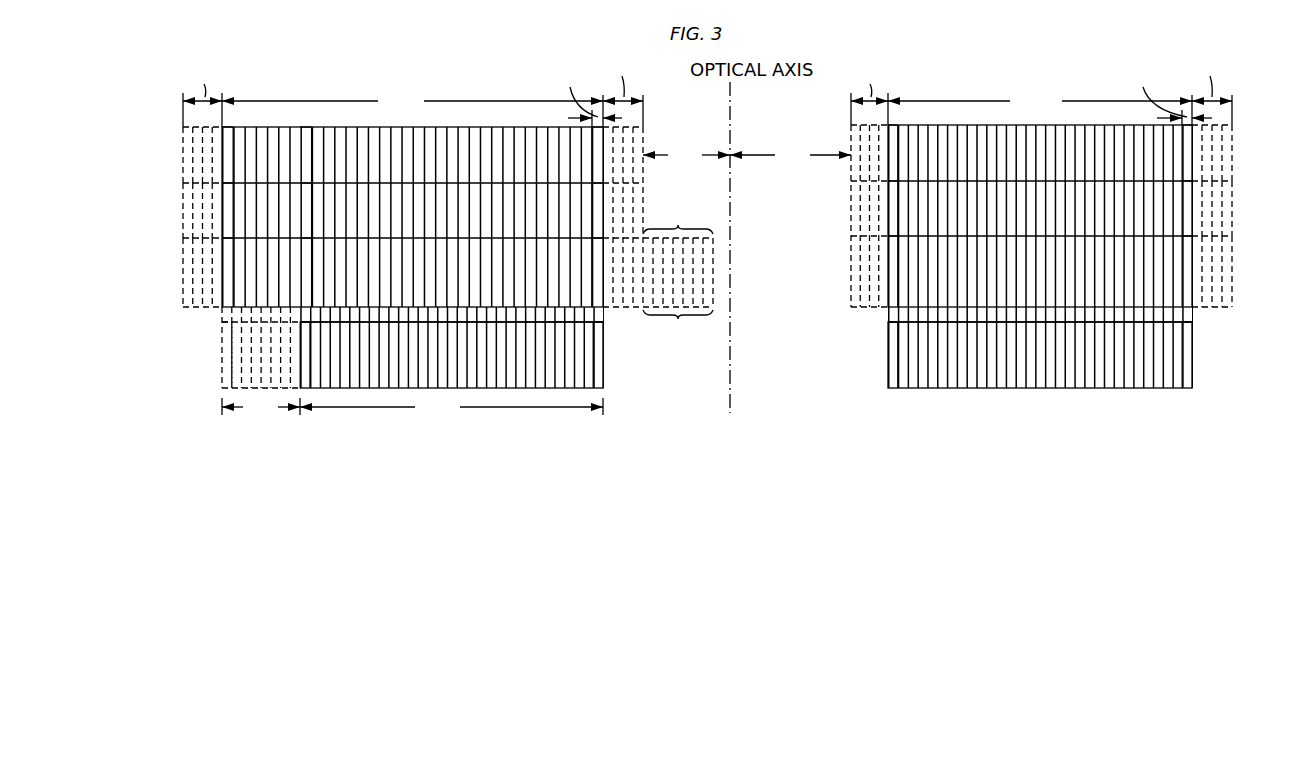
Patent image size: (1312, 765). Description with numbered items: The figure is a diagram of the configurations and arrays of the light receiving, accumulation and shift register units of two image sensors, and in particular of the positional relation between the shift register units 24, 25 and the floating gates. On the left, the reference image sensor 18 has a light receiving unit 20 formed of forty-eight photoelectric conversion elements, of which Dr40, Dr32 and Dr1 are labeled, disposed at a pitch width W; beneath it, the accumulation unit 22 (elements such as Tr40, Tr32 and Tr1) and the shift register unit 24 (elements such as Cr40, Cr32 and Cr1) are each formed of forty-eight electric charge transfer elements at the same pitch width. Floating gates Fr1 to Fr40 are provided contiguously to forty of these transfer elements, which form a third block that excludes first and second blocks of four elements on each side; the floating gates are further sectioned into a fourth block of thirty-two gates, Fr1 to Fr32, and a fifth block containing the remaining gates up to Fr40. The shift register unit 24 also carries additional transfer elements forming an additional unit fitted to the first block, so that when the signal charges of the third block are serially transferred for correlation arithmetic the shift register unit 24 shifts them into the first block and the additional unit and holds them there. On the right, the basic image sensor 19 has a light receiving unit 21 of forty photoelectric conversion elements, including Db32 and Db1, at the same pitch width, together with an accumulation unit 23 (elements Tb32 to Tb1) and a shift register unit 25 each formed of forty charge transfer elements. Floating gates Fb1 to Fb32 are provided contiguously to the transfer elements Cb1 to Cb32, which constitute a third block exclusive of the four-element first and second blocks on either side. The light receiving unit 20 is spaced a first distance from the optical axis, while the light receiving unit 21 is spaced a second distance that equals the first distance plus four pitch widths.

The reference image sensor 18 is at (472, 92).
The basic image sensor 19 is at (965, 92).
The light receiving unit 20 is at (183, 147).
The accumulation unit 22 is at (183, 218).
The shift register unit 24 is at (183, 278).
The light receiving unit 21 is at (1232, 152).
The accumulation unit 23 is at (1232, 205).
The shift register unit 25 is at (1232, 262).
The photoelectric conversion element Dr40 is at (228, 133).
The photoelectric conversion element Dr32 is at (305, 135).
The photoelectric conversion element Dr1 is at (598, 145).
The electric charge transfer element Tr32 is at (305, 197).
The electric charge transfer element Tr40 is at (228, 229).
The electric charge transfer element Tr1 is at (598, 205).
The electric charge transfer element Cr40 is at (228, 256).
The electric charge transfer element Cr32 is at (305, 291).
The electric charge transfer element Cr1 is at (598, 277).
The floating gate Fr40 is at (228, 340).
The floating gate Fr32 is at (305, 365).
The floating gate Fr1 is at (603, 360).
The photoelectric conversion element Db32 is at (893, 140).
The photoelectric conversion element Db1 is at (1190, 143).
The electric charge transfer element Tb32 is at (893, 210).
The electric charge transfer element Tb1 is at (1192, 222).
The electric charge transfer element Cb32 is at (893, 272).
The electric charge transfer element Cb1 is at (1192, 290).
The floating gate Fb32 is at (893, 352).
The floating gate Fb1 is at (1192, 352).